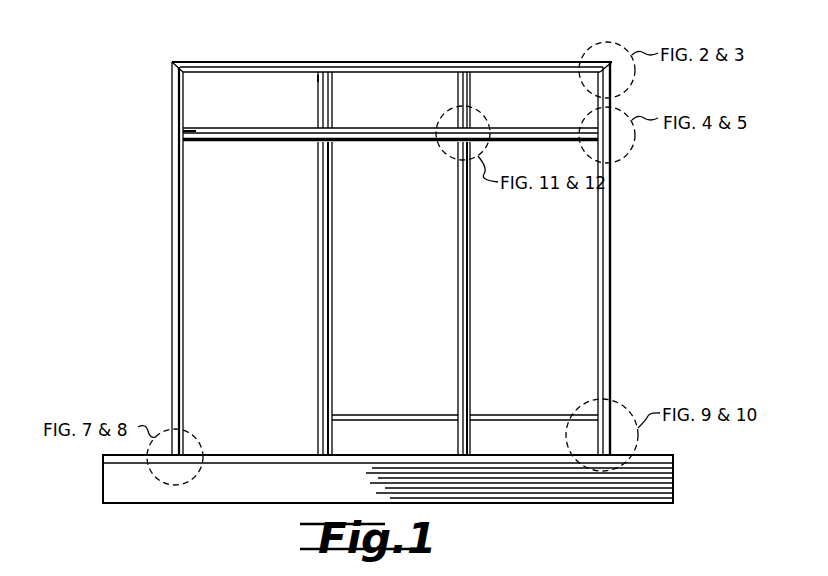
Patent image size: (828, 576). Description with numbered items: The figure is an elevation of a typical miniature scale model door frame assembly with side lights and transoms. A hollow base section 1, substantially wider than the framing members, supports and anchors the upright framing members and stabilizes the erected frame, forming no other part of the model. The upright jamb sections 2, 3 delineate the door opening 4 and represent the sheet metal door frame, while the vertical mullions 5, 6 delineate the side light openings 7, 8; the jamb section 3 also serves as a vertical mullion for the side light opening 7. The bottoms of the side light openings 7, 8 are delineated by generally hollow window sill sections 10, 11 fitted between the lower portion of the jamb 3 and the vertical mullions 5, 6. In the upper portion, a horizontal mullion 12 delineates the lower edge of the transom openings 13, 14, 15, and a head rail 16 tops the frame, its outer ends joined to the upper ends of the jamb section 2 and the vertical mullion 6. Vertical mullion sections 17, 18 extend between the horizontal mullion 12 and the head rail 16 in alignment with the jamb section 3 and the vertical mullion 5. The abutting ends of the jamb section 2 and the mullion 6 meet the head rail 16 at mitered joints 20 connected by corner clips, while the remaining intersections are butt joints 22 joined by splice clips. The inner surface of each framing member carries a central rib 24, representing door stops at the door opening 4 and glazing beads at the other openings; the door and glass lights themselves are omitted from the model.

The base section 1 is at (265, 483).
The jamb section 2 is at (178, 290).
The jamb section 3 is at (322, 259).
The door opening 4 is at (225, 347).
The vertical mullion 5 is at (471, 302).
The vertical mullion 6 is at (612, 276).
The side light opening 7 is at (420, 358).
The side light opening 8 is at (553, 330).
The window sill section 10 is at (386, 445).
The window sill section 11 is at (530, 445).
The horizontal mullion 12 is at (390, 141).
The transom opening 13 is at (238, 98).
The transom opening 14 is at (395, 95).
The transom opening 15 is at (545, 95).
The head rail 16 is at (418, 62).
The vertical mullion section 17 is at (321, 103).
The vertical mullion section 18 is at (470, 93).
The mitered joint 20 is at (173, 65).
The butt joint 22 is at (334, 80).
The central rib 24 is at (243, 128).